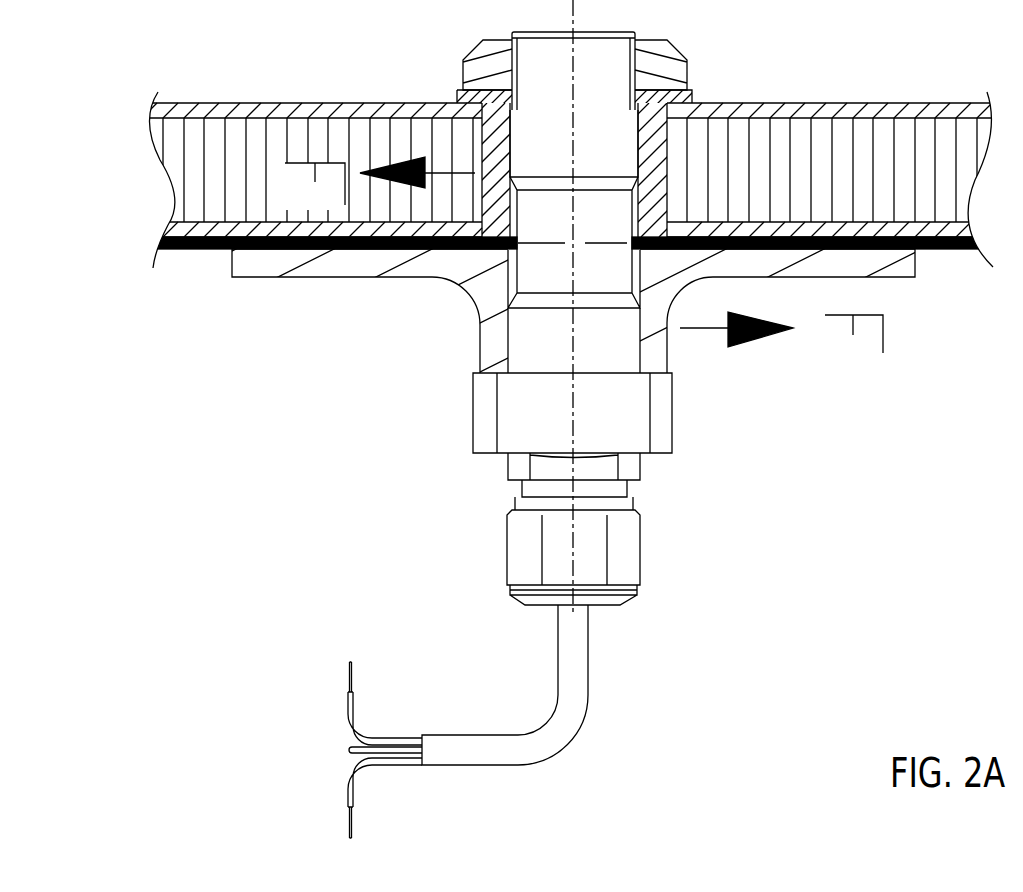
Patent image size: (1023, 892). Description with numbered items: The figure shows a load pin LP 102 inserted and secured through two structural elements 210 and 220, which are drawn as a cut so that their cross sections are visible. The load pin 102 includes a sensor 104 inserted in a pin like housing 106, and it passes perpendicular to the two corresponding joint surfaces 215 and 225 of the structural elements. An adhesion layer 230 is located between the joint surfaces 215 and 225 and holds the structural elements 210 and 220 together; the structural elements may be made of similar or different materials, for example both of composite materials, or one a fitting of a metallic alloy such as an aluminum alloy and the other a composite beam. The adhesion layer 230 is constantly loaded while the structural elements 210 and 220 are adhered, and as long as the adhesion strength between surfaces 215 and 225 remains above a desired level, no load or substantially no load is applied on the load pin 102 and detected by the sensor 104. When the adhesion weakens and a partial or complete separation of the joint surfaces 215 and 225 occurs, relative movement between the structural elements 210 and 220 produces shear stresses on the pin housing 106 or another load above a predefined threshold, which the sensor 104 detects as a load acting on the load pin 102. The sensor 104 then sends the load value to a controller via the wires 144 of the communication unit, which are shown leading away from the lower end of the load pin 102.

The load pin 102 is at (637, 412).
The sensor 104 is at (540, 280).
The pin like housing 106 is at (510, 422).
The wires 144 is at (455, 753).
The structural element 210 is at (350, 265).
The joint surface 215 is at (256, 250).
The structural element 220 is at (210, 162).
The joint surface 225 is at (353, 237).
The adhesion layer 230 is at (197, 232).